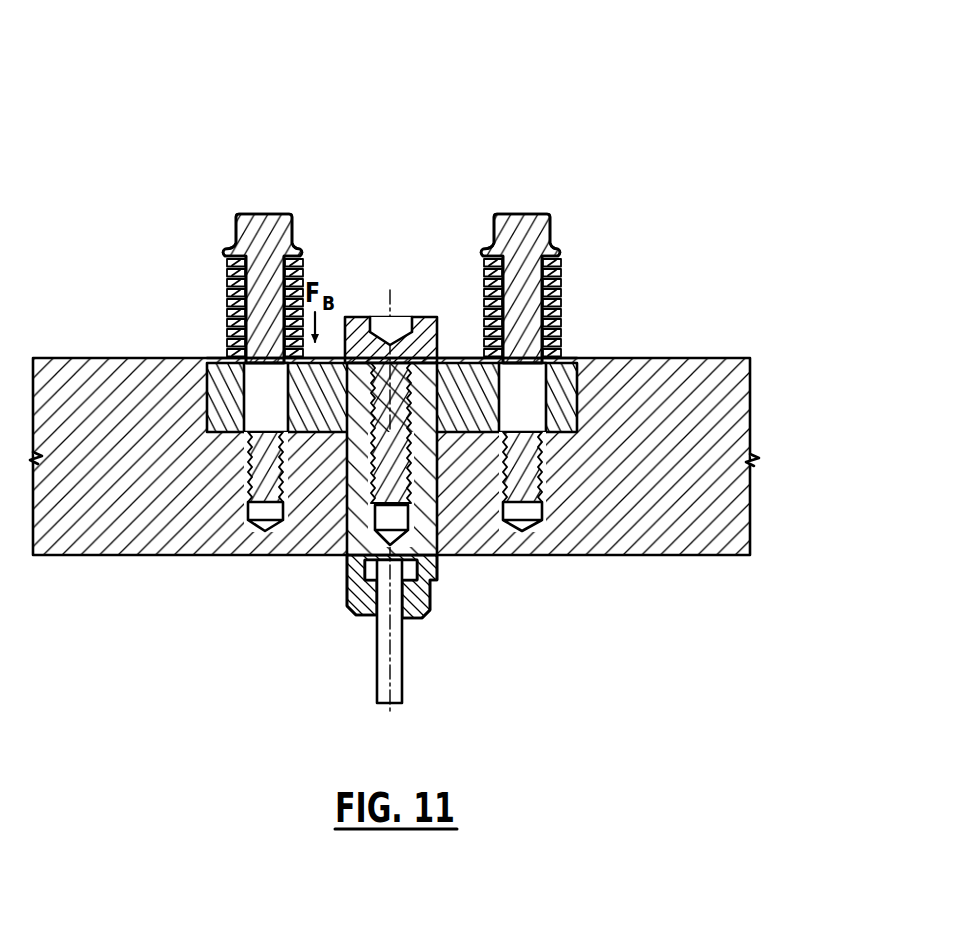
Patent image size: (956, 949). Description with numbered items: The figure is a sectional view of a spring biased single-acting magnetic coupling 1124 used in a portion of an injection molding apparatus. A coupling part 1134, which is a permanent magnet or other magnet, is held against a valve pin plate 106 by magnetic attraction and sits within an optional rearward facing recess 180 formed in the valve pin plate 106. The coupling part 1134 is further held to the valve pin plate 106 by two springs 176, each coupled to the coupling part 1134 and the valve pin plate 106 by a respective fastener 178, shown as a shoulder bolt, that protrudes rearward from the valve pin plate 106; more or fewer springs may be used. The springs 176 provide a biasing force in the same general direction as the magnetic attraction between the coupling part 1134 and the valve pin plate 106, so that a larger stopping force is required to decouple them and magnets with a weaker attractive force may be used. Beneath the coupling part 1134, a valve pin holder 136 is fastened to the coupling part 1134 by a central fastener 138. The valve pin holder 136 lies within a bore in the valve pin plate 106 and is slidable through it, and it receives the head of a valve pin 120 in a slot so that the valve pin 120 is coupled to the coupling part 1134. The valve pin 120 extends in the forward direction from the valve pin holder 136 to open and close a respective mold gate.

The spring biased single-acting magnetic coupling 1124 is at (305, 170).
The valve pin plate 106 is at (722, 408).
The coupling part 1134 is at (456, 385).
The fastener 138 is at (395, 316).
The valve pin holder 136 is at (423, 592).
The valve pin 120 is at (400, 672).
The rearward facing recess 180 is at (228, 362).
The fastener 178 is at (538, 230).
The springs 176 is at (558, 306).